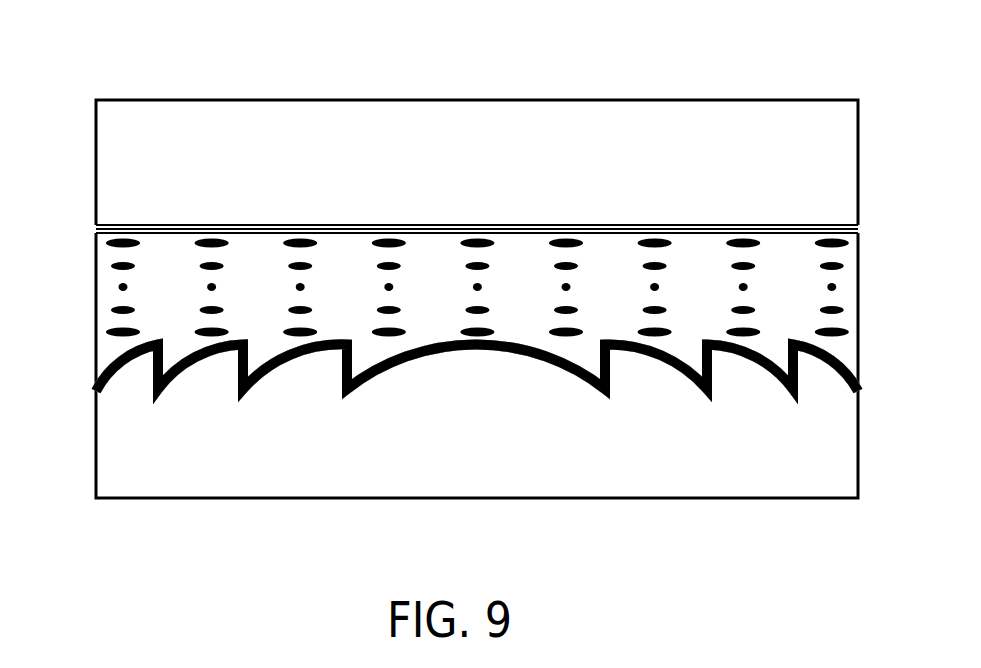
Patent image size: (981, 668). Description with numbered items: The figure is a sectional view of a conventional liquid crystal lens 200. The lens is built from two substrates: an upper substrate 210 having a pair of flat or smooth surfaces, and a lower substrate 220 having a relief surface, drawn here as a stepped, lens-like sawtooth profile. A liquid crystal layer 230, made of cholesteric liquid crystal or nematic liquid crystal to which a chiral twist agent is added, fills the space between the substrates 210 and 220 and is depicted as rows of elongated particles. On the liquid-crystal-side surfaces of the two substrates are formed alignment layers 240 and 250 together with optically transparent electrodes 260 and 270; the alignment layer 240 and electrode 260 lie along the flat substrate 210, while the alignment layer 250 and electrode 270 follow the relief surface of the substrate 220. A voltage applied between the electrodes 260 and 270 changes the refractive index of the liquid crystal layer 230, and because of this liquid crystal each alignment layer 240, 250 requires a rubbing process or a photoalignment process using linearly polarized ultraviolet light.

The liquid crystal lens 200 is at (476, 259).
The substrate 210 is at (825, 172).
The substrate 220 is at (825, 447).
The liquid crystal layer 230 is at (840, 283).
The alignment layer 240 is at (597, 238).
The alignment layer 250 is at (508, 337).
The optically transparent electrode 260 is at (610, 222).
The optically transparent electrode 270 is at (613, 373).